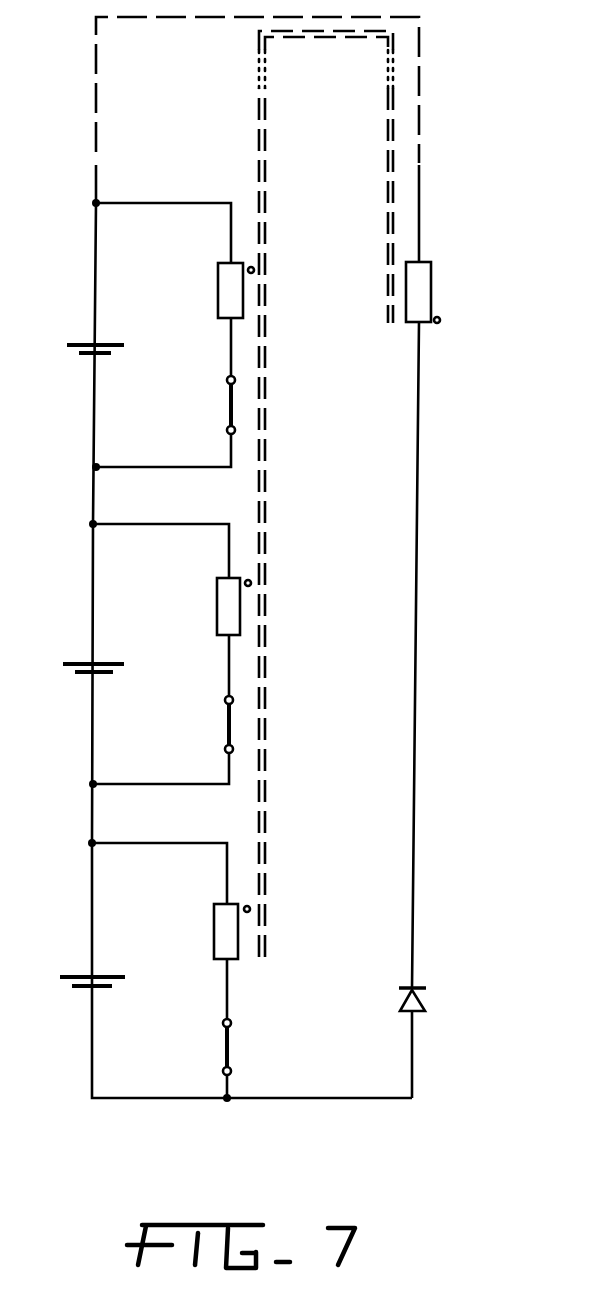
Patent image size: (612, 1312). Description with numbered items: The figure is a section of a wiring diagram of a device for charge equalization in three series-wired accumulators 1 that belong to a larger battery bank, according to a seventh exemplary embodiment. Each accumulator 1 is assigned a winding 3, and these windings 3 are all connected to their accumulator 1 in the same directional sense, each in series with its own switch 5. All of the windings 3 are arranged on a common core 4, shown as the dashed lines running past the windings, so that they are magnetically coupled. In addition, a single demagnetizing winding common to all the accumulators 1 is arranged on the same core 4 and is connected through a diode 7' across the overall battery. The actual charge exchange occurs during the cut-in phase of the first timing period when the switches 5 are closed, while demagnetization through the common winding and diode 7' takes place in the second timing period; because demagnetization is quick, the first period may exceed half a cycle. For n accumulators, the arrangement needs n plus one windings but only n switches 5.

The accumulator 1 is at (73, 344).
The winding 3 is at (199, 599).
The common core 4 is at (262, 622).
The switch 5 is at (228, 397).
The diode 7' is at (462, 990).